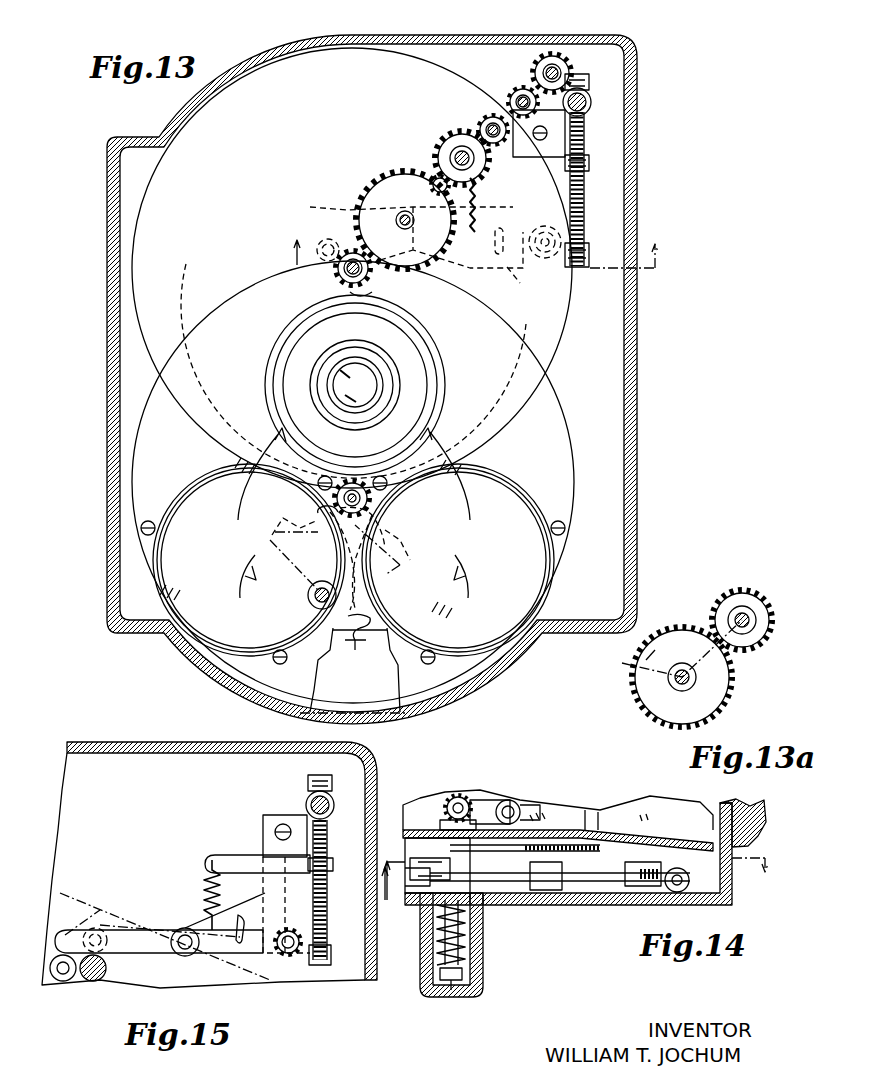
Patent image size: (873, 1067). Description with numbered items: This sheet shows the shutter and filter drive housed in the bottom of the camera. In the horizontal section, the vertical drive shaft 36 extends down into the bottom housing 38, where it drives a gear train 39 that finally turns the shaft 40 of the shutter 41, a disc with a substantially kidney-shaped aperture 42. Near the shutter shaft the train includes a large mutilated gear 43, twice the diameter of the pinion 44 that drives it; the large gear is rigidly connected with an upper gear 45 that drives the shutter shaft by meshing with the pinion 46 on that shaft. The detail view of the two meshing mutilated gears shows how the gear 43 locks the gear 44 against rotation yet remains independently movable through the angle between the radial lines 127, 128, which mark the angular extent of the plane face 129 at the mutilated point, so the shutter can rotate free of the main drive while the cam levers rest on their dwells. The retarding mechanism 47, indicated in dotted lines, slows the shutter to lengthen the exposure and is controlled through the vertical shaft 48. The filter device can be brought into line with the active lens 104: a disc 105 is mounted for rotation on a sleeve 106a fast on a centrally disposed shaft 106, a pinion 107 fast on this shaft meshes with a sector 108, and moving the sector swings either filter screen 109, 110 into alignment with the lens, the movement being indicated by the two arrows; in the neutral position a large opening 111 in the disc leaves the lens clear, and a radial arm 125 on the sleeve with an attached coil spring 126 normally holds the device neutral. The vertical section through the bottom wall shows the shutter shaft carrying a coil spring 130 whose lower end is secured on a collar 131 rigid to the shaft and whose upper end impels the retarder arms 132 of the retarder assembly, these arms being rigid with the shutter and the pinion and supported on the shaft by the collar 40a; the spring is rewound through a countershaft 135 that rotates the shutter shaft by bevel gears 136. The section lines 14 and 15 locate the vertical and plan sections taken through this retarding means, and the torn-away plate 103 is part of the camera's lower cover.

In FIG. 13, the section line 14- 14 is at (477, 244).
In FIG. 14, the section line 15- 15 is at (577, 879).
In FIG. 15, the section line 15- 15 is at (392, 883).
In FIG. 13, the vertical drive shaft 36 is at (556, 62).
In FIG. 13, the bottom housing 38 is at (110, 350).
In FIG. 14, the bottom housing 38 is at (733, 890).
In FIG. 15, the bottom housing 38 is at (205, 742).
In FIG. 13, the gear train 39 is at (484, 118).
In FIG. 13, the shutter shaft 40 is at (335, 274).
In FIG. 14, the shutter shaft 40 is at (440, 958).
In FIG. 14, the collar 40a is at (486, 905).
In FIG. 13, the shutter 41 is at (180, 258).
In FIG. 14, the shutter 41 is at (628, 830).
In FIG. 13, the aperture 42 is at (268, 272).
In FIG. 13, the large mutilated gear 43 is at (372, 182).
In FIG. 13, the pinion 44 is at (470, 135).
In FIG. 13A, the pinion 44 is at (744, 600).
In FIG. 13, the upper gear 45 is at (410, 185).
In FIG. 13, the pinion 46 is at (390, 288).
In FIG. 14, the pinion 46 is at (420, 798).
In FIG. 13, the retarding mechanism 47 is at (597, 186).
In FIG. 14, the retarding mechanism 47 is at (586, 898).
In FIG. 15, the retarding mechanism 47 is at (172, 915).
In FIG. 13, the vertical shaft 48 is at (590, 108).
In FIG. 15, the vertical shaft 48 is at (306, 800).
In FIG. 14, the plate 103 is at (650, 830).
In FIG. 13, the active lens 104 is at (370, 386).
In FIG. 13, the disc 105 is at (530, 445).
In FIG. 13, the shaft 106 is at (375, 498).
In FIG. 13, the sleeve 106a is at (380, 510).
In FIG. 13, the pinion 107 is at (336, 498).
In FIG. 13, the sector 108 is at (308, 592).
In FIG. 13, the filter screen 109 is at (182, 574).
In FIG. 13, the filter screen 110 is at (518, 574).
In FIG. 13, the large opening 111 is at (275, 360).
In FIG. 13, the radial arm 125 is at (395, 540).
In FIG. 13, the coil spring 126 is at (358, 620).
In FIG. 13A, the radial line 127 is at (622, 663).
In FIG. 13A, the radial line 128 is at (716, 660).
In FIG. 13A, the plane face 129 is at (683, 628).
In FIG. 14, the coil spring 130 is at (486, 936).
In FIG. 14, the collar 131 is at (464, 976).
In FIG. 14, the retarder arms 132 is at (433, 895).
In FIG. 15, the retarder arms 132 is at (70, 975).
In FIG. 14, the countershaft 135 is at (495, 800).
In FIG. 14, the bevel gears 136 is at (462, 795).